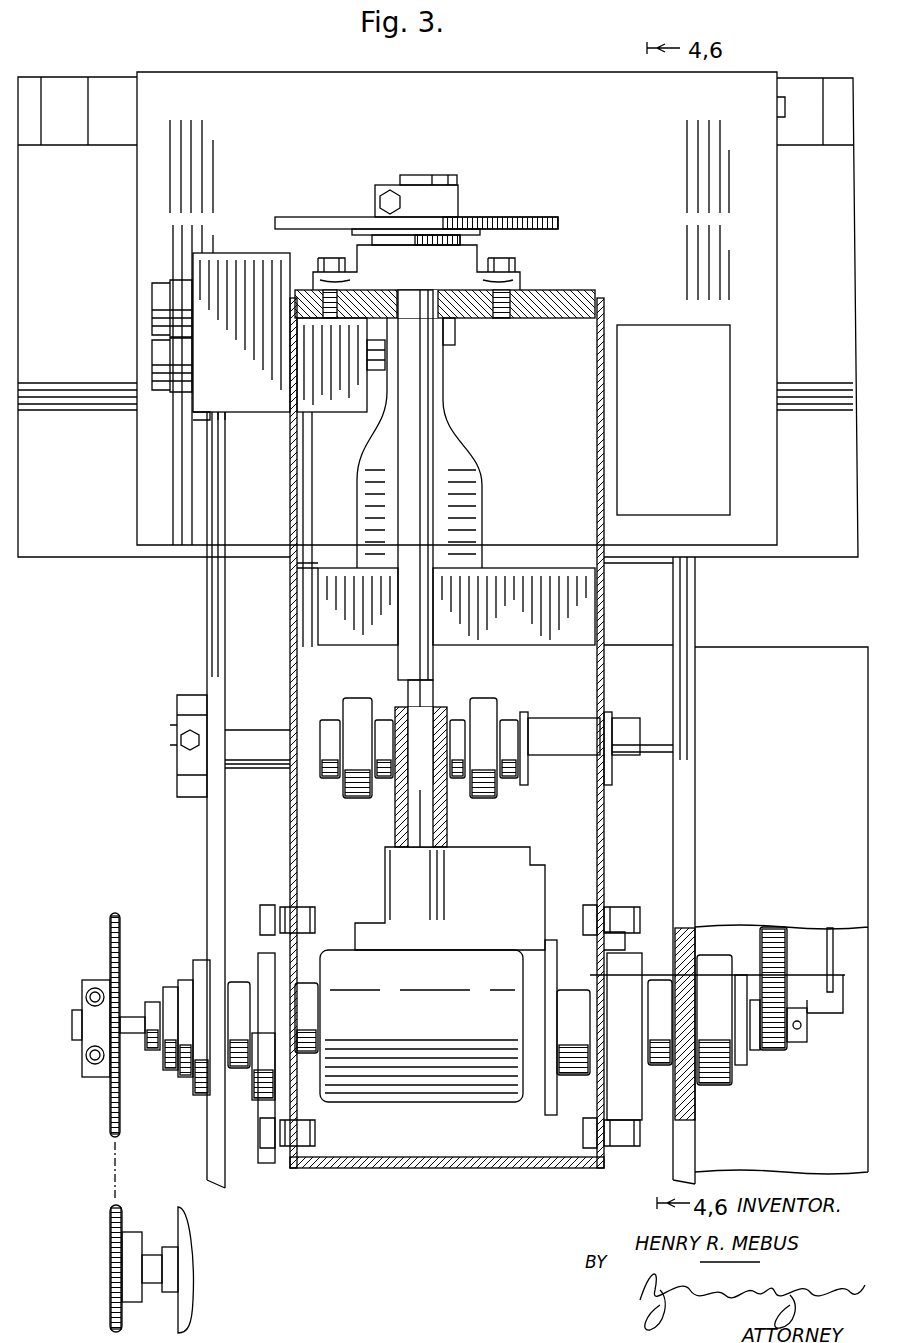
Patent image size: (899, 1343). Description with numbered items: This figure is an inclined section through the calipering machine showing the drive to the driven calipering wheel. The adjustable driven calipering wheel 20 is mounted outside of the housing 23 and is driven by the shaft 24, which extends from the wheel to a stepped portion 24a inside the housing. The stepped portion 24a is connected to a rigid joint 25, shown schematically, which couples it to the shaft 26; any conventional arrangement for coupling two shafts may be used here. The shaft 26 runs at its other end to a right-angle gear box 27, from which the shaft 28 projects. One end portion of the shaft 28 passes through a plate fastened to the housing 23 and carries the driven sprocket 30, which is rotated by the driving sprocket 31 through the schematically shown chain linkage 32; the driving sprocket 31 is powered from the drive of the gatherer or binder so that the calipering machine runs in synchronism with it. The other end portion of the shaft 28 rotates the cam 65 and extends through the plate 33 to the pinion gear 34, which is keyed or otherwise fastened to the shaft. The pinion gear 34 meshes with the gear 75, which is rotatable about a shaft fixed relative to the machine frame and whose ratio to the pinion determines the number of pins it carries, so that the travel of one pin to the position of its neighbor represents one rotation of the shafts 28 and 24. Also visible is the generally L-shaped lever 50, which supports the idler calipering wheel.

The driven calipering wheel 20 is at (560, 223).
The housing 23 is at (603, 438).
The shaft 24 is at (432, 368).
The stepped portion 24a is at (432, 690).
The rigid joint 25 is at (447, 815).
The shaft 26 is at (398, 838).
The right-angle gear box 27 is at (428, 1097).
The shaft 28 is at (302, 1018).
The sprocket 30 is at (93, 930).
The driving sprocket 31 is at (92, 1265).
The chain linkage 32 is at (110, 1158).
The plate 33 is at (620, 905).
The pinion gear 34 is at (780, 1052).
The lever 50 is at (465, 455).
The cam 65 is at (548, 942).
The gear 75 is at (765, 938).